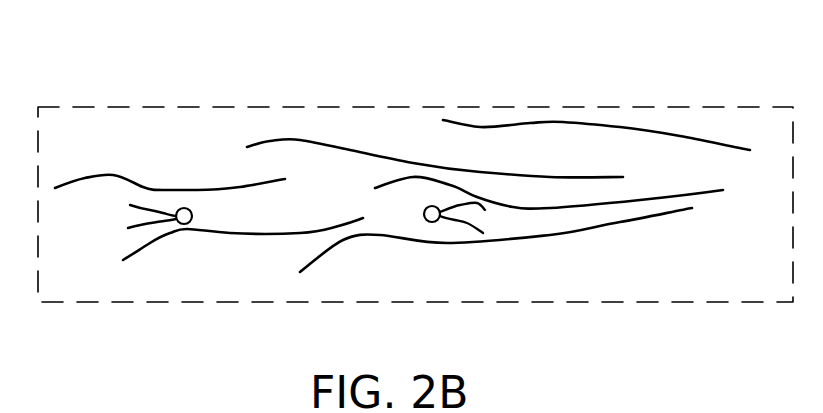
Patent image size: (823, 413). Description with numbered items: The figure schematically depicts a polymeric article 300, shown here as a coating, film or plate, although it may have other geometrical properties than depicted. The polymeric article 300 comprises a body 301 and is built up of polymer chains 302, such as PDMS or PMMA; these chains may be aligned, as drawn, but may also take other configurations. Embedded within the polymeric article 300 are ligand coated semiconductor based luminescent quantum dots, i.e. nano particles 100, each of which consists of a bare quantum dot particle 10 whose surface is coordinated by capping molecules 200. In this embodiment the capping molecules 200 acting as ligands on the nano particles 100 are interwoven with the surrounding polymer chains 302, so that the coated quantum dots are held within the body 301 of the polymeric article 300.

The quantum dot particle 10 is at (193, 204).
The ligand coated semiconductor based luminescent quantum dot 100 is at (427, 201).
The capping molecules 200 is at (143, 205).
The polymeric article 300 is at (558, 76).
The body 301 is at (610, 258).
The polymer chains 302 is at (659, 127).